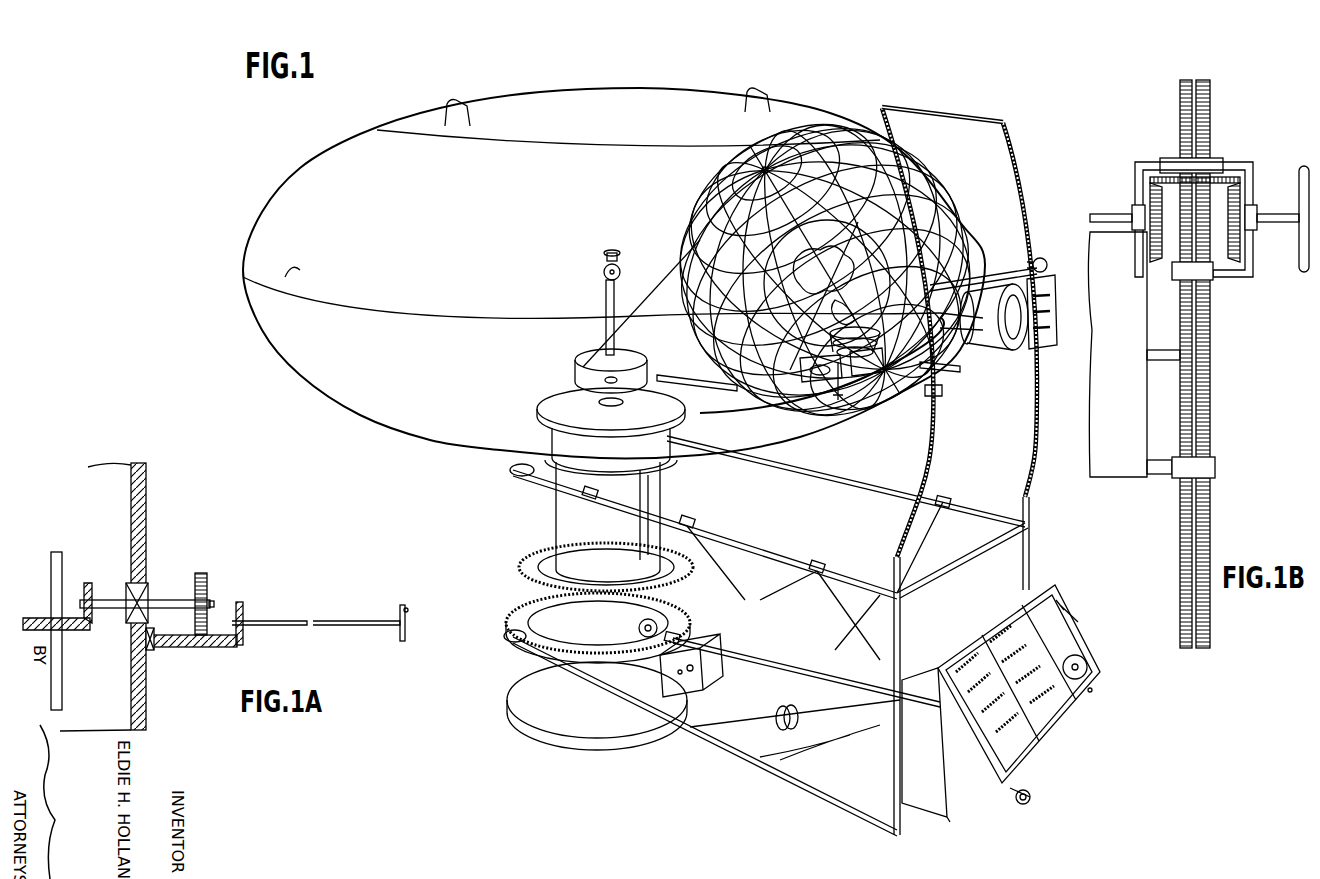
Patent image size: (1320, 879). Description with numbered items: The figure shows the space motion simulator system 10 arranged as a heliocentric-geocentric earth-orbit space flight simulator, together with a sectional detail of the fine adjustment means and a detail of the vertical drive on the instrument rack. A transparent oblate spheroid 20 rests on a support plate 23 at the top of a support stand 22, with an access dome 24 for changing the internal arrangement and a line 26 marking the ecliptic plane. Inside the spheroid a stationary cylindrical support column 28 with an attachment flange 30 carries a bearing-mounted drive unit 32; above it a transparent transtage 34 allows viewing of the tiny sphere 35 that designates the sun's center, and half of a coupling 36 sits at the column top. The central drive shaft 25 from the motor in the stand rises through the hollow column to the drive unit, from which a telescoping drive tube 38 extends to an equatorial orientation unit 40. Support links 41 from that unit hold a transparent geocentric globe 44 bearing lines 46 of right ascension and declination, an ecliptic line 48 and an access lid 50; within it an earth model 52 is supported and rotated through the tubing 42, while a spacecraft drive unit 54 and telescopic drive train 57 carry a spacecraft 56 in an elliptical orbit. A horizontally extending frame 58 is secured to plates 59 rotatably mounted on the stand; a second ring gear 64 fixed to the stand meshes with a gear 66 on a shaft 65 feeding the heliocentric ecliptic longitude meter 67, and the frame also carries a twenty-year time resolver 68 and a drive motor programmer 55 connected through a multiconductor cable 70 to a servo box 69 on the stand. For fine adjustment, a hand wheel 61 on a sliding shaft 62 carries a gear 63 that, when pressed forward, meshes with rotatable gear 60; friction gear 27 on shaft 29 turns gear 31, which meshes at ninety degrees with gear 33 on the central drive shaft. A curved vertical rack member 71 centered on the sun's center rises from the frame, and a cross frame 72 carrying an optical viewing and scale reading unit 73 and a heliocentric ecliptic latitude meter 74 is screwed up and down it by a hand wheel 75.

In FIG. 1, the space motion simulator system 10 is at (400, 491).
In FIG. 1, the transparent oblate spheroid 20 is at (270, 205).
In FIG. 1, the support stand 22 is at (556, 516).
In FIG. 1A, the support stand 22 is at (147, 494).
In FIG. 1, the support plate 23 is at (540, 408).
In FIG. 1, the access dome 24 is at (548, 100).
In FIG. 1A, the central drive shaft 25 is at (63, 658).
In FIG. 1, the ecliptic plane line 26 is at (262, 280).
In FIG. 1, the friction gear 27 is at (638, 626).
In FIG. 1A, the friction gear 27 is at (202, 572).
In FIG. 1, the cylindrical support column 28 is at (604, 300).
In FIG. 1A, the shaft 29 is at (176, 600).
In FIG. 1, the attachment flange 30 is at (552, 438).
In FIG. 1A, the gear 31 is at (88, 582).
In FIG. 1, the drive unit 32 is at (572, 368).
In FIG. 1A, the gear 33 is at (30, 618).
In FIG. 1, the transparent transtage 34 is at (604, 274).
In FIG. 1, the sun's center sphere 35 is at (620, 273).
In FIG. 1, the coupling half 36 is at (604, 254).
In FIG. 1, the telescope drive tube 38 is at (725, 388).
In FIG. 1, the equatorial orientation unit 40 is at (815, 382).
In FIG. 1, the support links 41 is at (838, 402).
In FIG. 1, the earth support tube 42 is at (870, 378).
In FIG. 1, the transparent geocentric globe 44 is at (698, 222).
In FIG. 1, the lines of right ascension and declination 46 is at (690, 246).
In FIG. 1, the ecliptic plane line 48 is at (700, 292).
In FIG. 1, the access lid 50 is at (760, 170).
In FIG. 1, the earth model 52 is at (945, 368).
In FIG. 1, the spacecraft drive unit 54 is at (935, 392).
In FIG. 1, the drive motor programmer 55 is at (1070, 645).
In FIG. 1, the spacecraft 56 is at (766, 300).
In FIG. 1, the drive train 57 is at (790, 348).
In FIG. 1, the horizontally extending frame 58 is at (800, 780).
In FIG. 1, the plates 59 is at (510, 470).
In FIG. 1, the rotatable gear 60 is at (530, 600).
In FIG. 1A, the rotatable gear 60 is at (192, 647).
In FIG. 1, the hand wheel 61 is at (1028, 802).
In FIG. 1A, the hand wheel 61 is at (400, 610).
In FIG. 1, the shaft 62 is at (1030, 788).
In FIG. 1A, the shaft 62 is at (294, 620).
In FIG. 1, the gear 63 is at (690, 638).
In FIG. 1A, the gear 63 is at (239, 602).
In FIG. 1, the second ring gear 64 is at (522, 565).
In FIG. 1, the shaft 65 is at (750, 580).
In FIG. 1, the gear 66 is at (700, 550).
In FIG. 1, the heliocentric ecliptic longitude meter 67 is at (1055, 722).
In FIG. 1, the twenty-year time resolver 68 is at (983, 802).
In FIG. 1, the servo box 69 is at (678, 700).
In FIG. 1, the multiconductor cable 70 is at (832, 748).
In FIG. 1, the vertical curved rack member 71 is at (1033, 438).
In FIG. 1B, the vertical curved rack member 71 is at (1185, 130).
In FIG. 1, the cross frame 72 is at (963, 284).
In FIG. 1B, the cross frame 72 is at (1112, 213).
In FIG. 1, the optical viewing and scale reading unit 73 is at (997, 352).
In FIG. 1, the heliocentric ecliptic latitude meter 74 is at (1047, 332).
In FIG. 1B, the heliocentric ecliptic latitude meter 74 is at (1103, 382).
In FIG. 1, the hand wheel 75 is at (1043, 259).
In FIG. 1B, the hand wheel 75 is at (1306, 172).